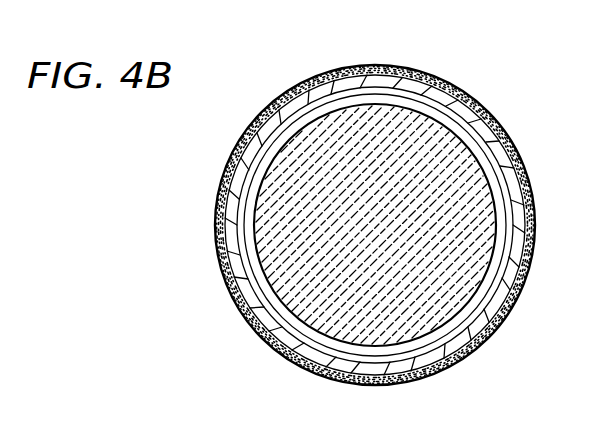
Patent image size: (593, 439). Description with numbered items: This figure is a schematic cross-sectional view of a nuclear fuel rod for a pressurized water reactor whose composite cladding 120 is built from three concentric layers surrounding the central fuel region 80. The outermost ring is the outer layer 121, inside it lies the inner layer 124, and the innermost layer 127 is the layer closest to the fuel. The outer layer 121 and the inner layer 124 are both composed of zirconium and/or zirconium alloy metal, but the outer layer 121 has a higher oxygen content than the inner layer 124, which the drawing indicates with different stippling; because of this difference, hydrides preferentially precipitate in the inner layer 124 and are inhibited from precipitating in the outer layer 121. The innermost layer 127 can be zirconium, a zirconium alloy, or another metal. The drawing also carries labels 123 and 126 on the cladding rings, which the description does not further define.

The core 80 is at (465, 145).
The composite cladding 120 is at (220, 260).
The outer layer 121 is at (217, 210).
The outer stippled layer 123 is at (233, 163).
The inner layer 124 is at (268, 340).
The segmented layer 126 is at (291, 103).
The innermost layer 127 is at (328, 76).